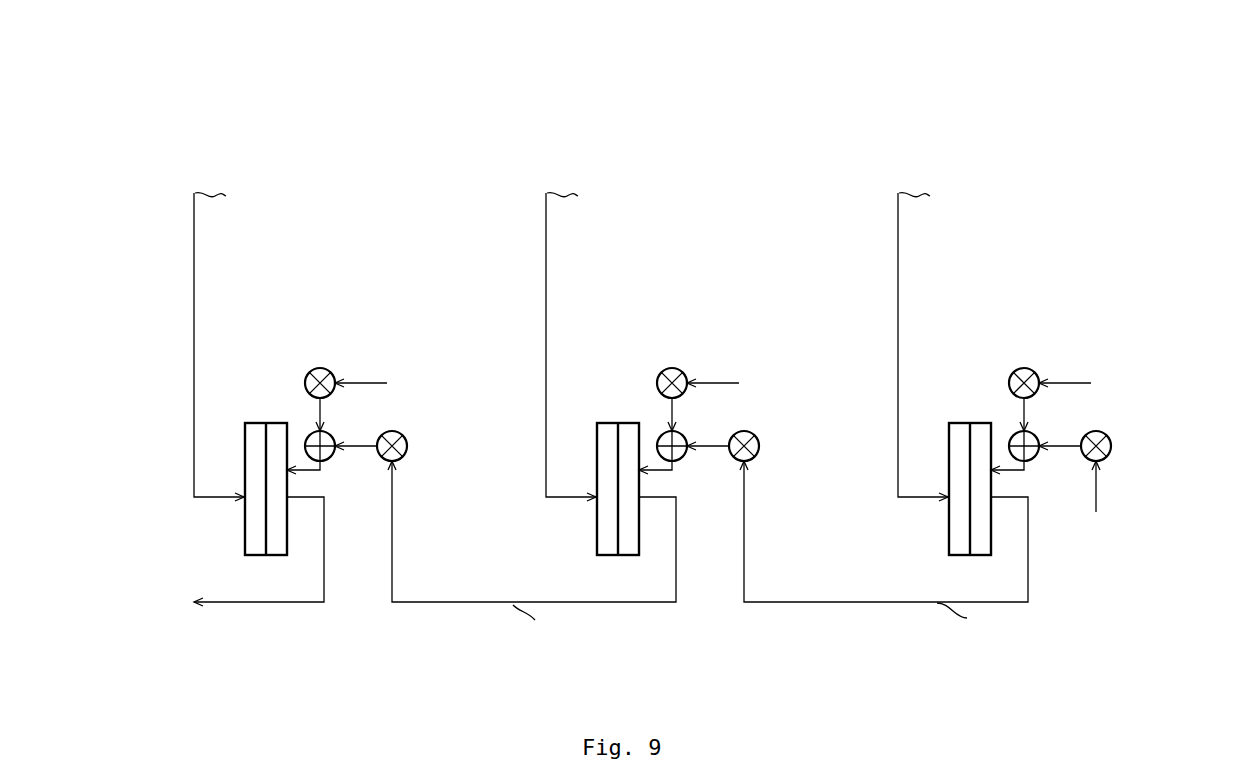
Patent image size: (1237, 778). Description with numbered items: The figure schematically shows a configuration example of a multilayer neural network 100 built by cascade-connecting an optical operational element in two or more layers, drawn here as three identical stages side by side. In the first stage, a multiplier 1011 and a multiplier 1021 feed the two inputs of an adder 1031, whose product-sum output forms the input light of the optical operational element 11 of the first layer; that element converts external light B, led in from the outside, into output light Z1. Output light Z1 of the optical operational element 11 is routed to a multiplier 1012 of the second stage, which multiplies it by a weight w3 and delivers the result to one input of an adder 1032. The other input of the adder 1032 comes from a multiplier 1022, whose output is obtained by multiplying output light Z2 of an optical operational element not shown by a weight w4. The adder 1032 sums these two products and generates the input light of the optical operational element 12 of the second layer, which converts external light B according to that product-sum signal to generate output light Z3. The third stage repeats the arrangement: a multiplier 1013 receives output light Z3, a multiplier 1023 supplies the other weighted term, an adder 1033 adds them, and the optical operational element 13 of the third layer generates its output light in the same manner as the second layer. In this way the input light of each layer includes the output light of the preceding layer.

The multilayer neural network 100 is at (632, 116).
The optical operational element of a first layer 11 is at (964, 421).
The optical operational element of a second layer 12 is at (612, 421).
The optical operational element of a third layer 13 is at (260, 421).
The multiplier 1011 is at (1113, 443).
The multiplier 1012 is at (761, 443).
The multiplier 1013 is at (409, 443).
The multiplier 1021 is at (1039, 372).
The multiplier 1022 is at (687, 372).
The multiplier 1023 is at (335, 372).
The adder 1031 is at (1039, 461).
The adder 1032 is at (687, 461).
The adder 1033 is at (335, 461).